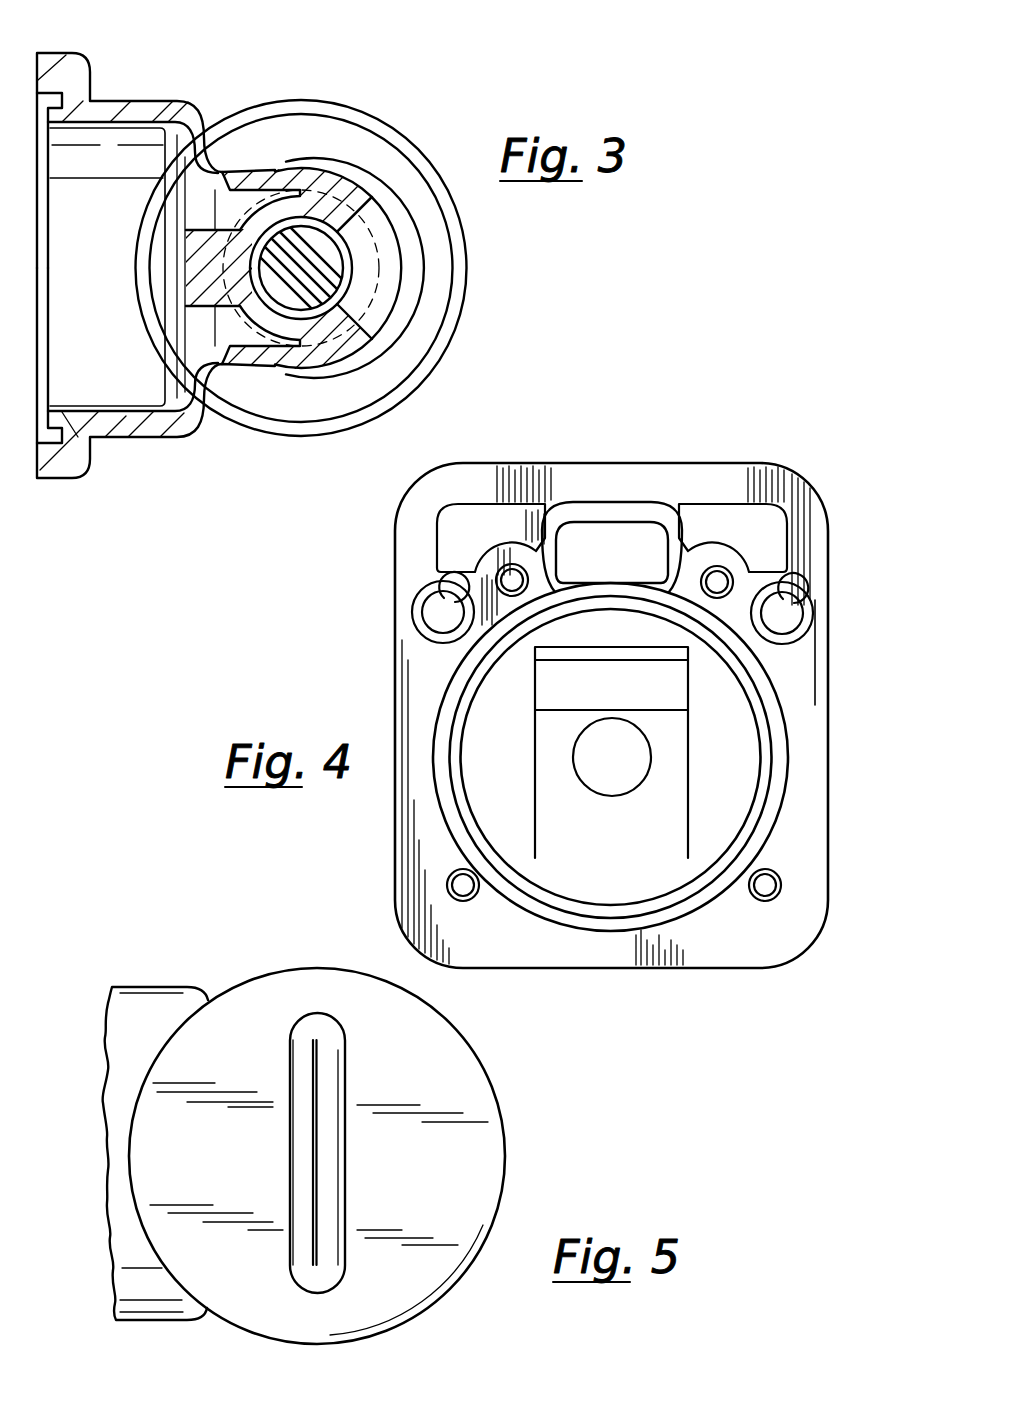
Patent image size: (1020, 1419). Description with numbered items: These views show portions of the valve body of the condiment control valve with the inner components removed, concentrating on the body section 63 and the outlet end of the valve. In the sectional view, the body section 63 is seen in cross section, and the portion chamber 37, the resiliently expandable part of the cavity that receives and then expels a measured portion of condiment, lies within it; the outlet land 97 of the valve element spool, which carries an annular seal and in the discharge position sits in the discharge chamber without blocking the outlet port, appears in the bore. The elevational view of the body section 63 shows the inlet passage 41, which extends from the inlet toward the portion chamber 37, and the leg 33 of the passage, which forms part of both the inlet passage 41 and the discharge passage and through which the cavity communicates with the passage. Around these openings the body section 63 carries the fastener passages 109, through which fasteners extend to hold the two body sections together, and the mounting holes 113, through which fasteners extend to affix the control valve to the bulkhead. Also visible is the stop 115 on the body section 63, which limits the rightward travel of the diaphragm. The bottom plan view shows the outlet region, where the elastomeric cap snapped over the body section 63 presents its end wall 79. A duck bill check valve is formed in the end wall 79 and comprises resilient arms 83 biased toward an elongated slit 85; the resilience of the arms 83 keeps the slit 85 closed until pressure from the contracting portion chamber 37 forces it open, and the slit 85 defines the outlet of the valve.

In FIG. 3, the body section 63 is at (154, 98).
In FIG. 4, the body section 63 is at (391, 631).
In FIG. 5, the body section 63 is at (108, 1104).
In FIG. 3, the portion chamber 37 is at (108, 308).
In FIG. 3, the outlet land 97 is at (310, 240).
In FIG. 4, the inlet passage 41 is at (630, 540).
In FIG. 4, the fastener passages 109 is at (512, 578).
In FIG. 4, the mounting holes 113 is at (443, 612).
In FIG. 4, the leg 33 is at (670, 690).
In FIG. 4, the stop 115 is at (625, 768).
In FIG. 5, the end wall 79 is at (283, 975).
In FIG. 5, the resilient arms 83 is at (293, 1133).
In FIG. 5, the elongated slit 85 is at (320, 1188).